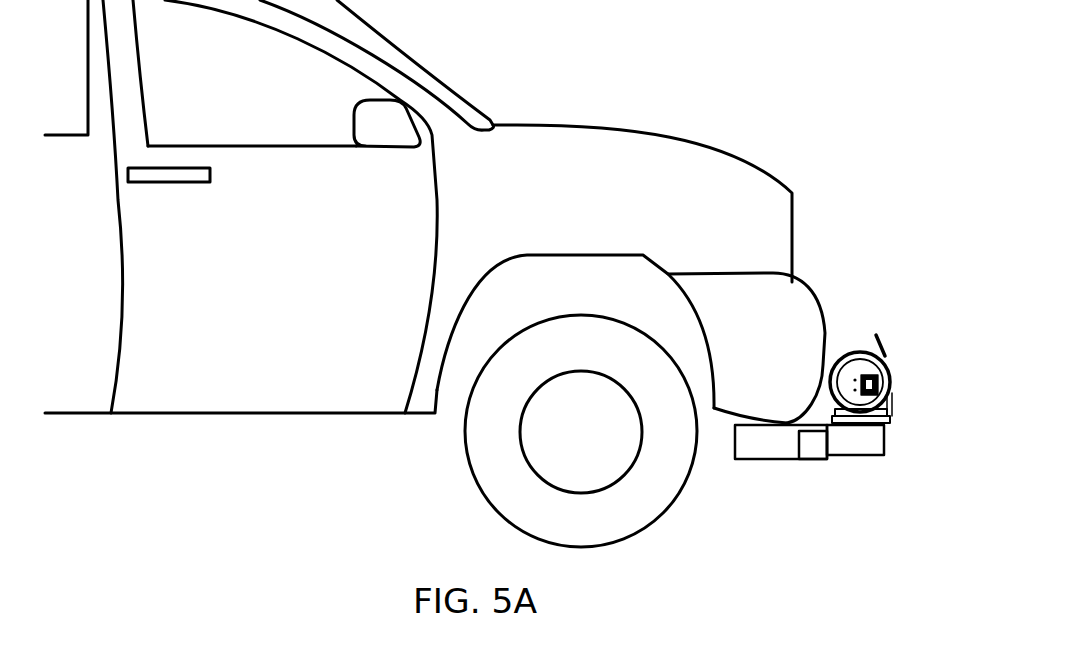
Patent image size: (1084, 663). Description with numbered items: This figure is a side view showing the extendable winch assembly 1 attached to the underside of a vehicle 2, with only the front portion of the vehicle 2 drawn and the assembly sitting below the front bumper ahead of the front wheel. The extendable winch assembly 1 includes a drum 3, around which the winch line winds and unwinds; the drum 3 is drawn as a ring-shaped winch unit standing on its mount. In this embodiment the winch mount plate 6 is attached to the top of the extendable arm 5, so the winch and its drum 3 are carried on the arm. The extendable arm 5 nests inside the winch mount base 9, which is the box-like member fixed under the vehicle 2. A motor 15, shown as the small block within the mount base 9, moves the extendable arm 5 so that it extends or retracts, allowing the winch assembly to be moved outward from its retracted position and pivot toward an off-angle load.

The extendable winch assembly 1 is at (895, 414).
The vehicle 2 is at (467, 53).
The drum 3 is at (893, 373).
The extendable arm 5 is at (860, 457).
The winch mount plate 6 is at (893, 440).
The winch mount base 9 is at (752, 460).
The motor 15 is at (812, 442).